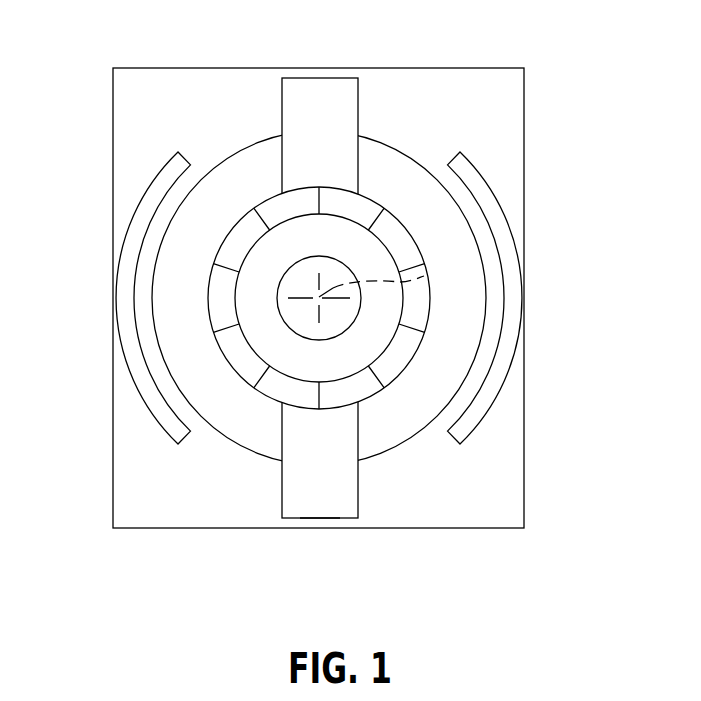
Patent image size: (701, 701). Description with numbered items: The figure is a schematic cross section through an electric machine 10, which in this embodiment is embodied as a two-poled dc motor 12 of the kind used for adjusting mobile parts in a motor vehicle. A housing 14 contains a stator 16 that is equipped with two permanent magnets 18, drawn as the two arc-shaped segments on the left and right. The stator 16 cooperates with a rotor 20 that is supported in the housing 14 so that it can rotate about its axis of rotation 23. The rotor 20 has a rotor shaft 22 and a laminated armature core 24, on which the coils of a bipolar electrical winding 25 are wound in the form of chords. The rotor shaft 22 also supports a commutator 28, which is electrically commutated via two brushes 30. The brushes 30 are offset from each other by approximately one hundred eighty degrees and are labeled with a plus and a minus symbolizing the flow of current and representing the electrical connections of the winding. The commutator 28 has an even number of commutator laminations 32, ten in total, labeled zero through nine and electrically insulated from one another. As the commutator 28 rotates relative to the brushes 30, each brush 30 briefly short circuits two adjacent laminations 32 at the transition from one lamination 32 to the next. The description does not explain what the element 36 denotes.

The electric machine 10 is at (332, 264).
The two-poled dc motor 12 is at (332, 264).
The housing 14 is at (365, 298).
The stator 16 is at (513, 465).
The permanent magnets 18 is at (503, 378).
The rotor 20 is at (389, 133).
The rotor shaft 22 is at (340, 322).
The axis of rotation 23 is at (424, 276).
The laminated armature core 24 is at (325, 318).
The bipolar electrical winding 25 is at (403, 428).
The commutator 28 is at (244, 218).
The brushes 30 is at (320, 518).
The commutator laminations 32 is at (252, 365).
The upper connector 36 is at (337, 78).